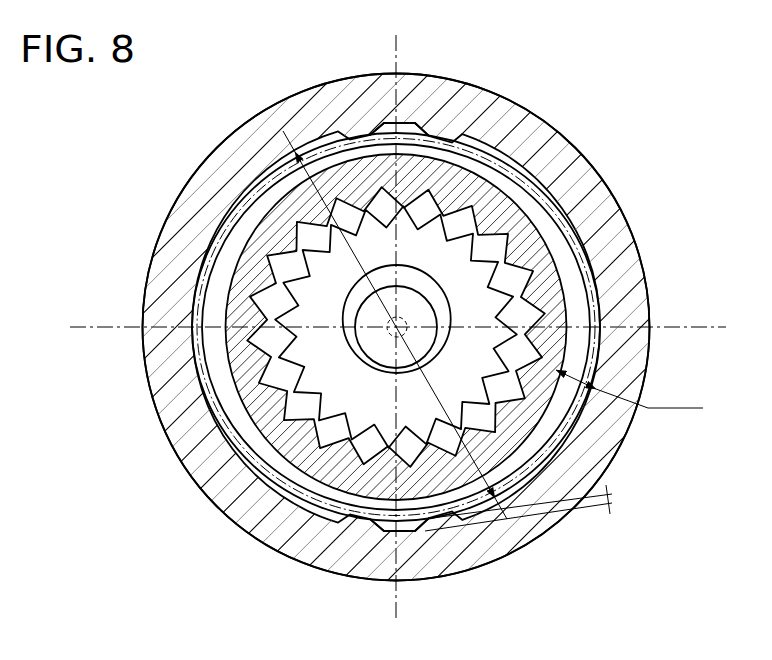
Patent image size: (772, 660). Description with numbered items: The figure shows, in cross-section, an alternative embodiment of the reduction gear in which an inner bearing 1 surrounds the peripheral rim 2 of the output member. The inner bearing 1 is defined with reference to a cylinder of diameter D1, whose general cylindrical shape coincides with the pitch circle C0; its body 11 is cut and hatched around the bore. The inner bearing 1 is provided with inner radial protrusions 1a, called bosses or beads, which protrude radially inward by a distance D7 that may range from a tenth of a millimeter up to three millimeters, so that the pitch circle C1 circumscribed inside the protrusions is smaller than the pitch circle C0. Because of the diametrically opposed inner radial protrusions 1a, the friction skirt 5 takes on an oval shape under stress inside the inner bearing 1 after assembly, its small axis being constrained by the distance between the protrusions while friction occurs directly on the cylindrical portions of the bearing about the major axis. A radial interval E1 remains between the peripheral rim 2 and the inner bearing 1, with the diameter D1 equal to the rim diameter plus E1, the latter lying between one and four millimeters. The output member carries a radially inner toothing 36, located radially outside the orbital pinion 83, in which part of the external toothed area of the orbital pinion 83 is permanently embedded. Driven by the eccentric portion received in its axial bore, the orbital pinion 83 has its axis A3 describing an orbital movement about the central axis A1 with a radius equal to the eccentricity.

The inner bearing 1 is at (217, 444).
The housing body 11 is at (268, 522).
The inner radial protrusions 1a is at (437, 131).
The elastic ring 5 is at (383, 285).
The pitch circle C0 is at (277, 157).
The pitch circle C1 is at (265, 188).
The peripheral rim 2 is at (386, 330).
The radially inner toothing 36 is at (549, 279).
The orbital pinion 83 is at (262, 370).
The first axis A1 is at (397, 319).
The axis of the orbital pinion A3 is at (405, 314).
The diameter D1 is at (395, 325).
The radial interval E1 is at (629, 390).
The distance D7 is at (542, 508).